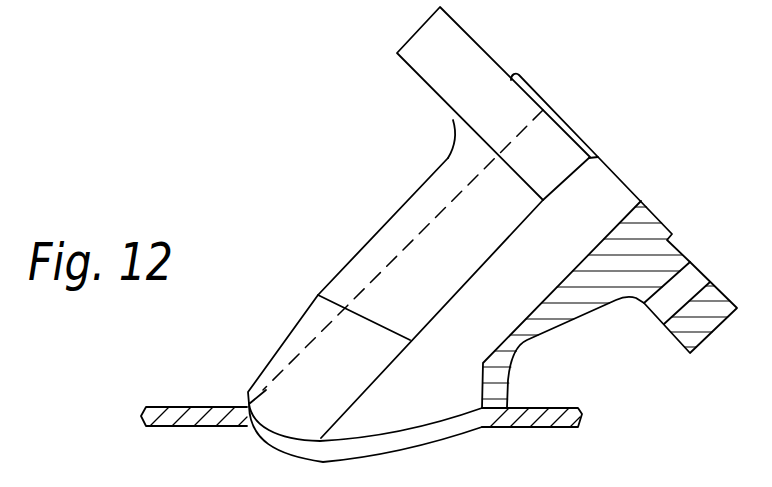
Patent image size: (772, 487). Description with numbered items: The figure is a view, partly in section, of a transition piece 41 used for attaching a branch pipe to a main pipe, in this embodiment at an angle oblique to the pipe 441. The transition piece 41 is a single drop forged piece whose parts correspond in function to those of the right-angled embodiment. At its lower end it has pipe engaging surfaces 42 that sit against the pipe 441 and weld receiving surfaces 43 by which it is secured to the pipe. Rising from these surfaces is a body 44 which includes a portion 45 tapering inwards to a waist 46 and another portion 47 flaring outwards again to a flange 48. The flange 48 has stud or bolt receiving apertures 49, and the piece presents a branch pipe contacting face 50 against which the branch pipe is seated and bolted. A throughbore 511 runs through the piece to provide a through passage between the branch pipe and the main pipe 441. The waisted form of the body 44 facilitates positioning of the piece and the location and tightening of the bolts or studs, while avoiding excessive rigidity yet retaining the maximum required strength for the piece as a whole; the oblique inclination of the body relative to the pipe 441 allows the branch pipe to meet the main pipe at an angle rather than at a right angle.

The transition piece 41 is at (320, 228).
The pipe engaging surfaces 42 is at (272, 430).
The weld receiving surfaces 43 is at (246, 400).
The body 44 is at (445, 267).
The tapering portion 45 is at (340, 281).
The waist 46 is at (527, 343).
The flaring portion 47 is at (452, 152).
The flange 48 is at (430, 45).
The stud or bolt receiving apertures 49 is at (697, 282).
The branch pipe contacting face 50 is at (575, 127).
The pipe 441 is at (543, 422).
The throughbore 511 is at (612, 193).